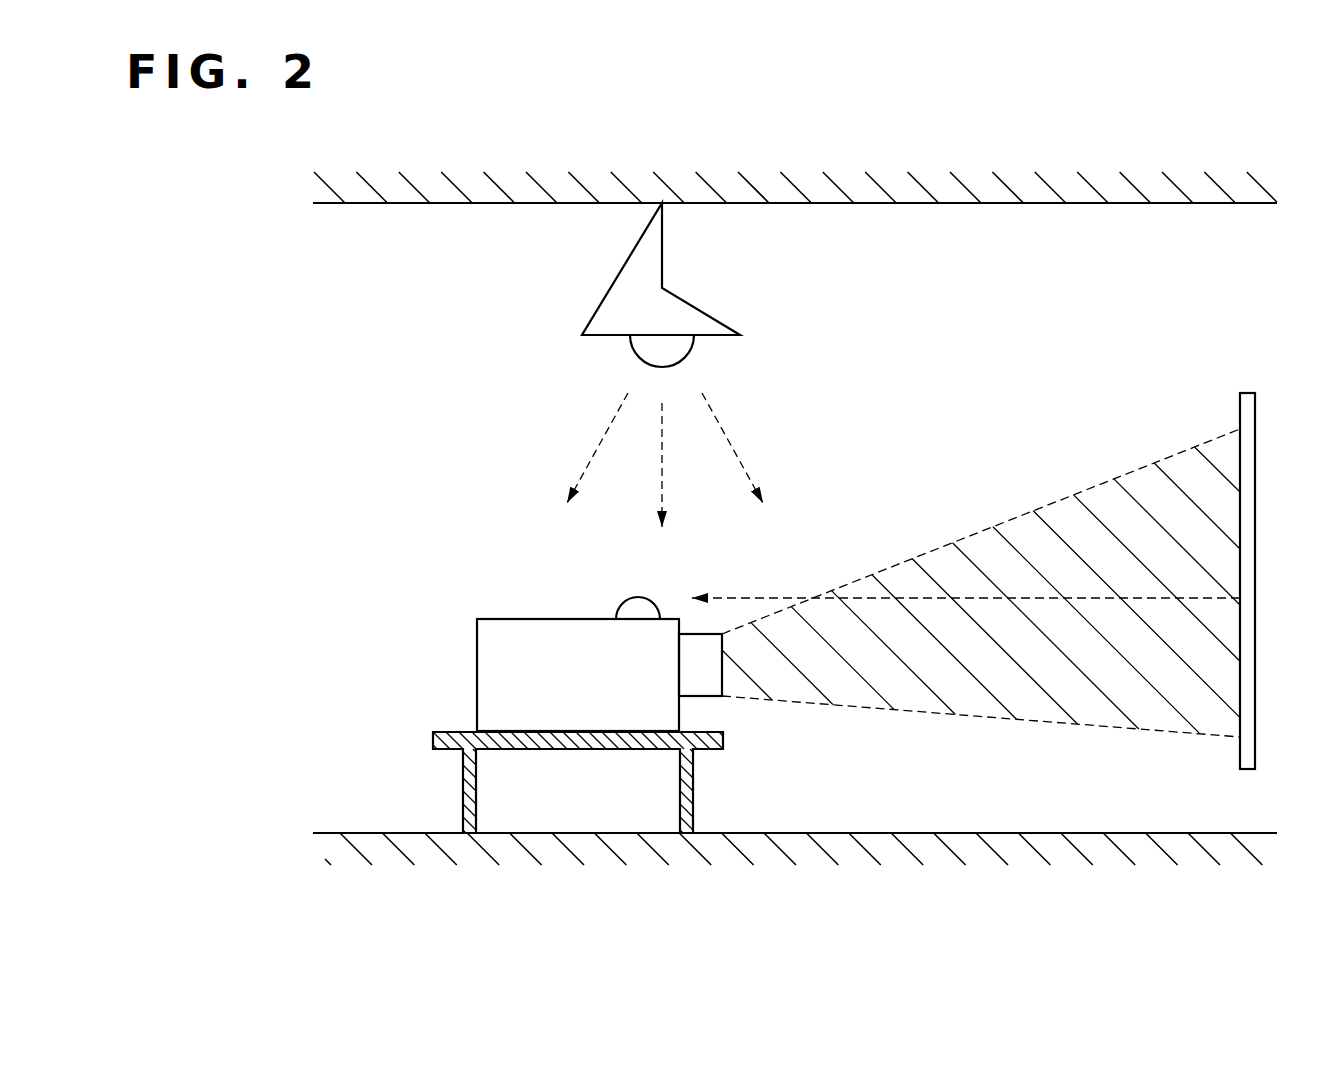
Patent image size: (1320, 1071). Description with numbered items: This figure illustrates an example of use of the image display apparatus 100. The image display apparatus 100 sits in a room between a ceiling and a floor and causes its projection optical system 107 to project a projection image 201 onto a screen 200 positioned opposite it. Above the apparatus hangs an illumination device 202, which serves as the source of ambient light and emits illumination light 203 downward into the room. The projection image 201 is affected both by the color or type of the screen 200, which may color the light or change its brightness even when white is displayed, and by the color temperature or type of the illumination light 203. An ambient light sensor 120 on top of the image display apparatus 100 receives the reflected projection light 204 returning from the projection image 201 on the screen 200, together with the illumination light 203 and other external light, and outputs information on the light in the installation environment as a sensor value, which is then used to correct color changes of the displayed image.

The image display apparatus 100 is at (505, 618).
The projection optical system 107 is at (703, 697).
The ambient light sensor 120 is at (630, 597).
The screen 200 is at (1247, 392).
The projection image 201 is at (1030, 710).
The illumination device 202 is at (710, 313).
The illumination light 203 is at (592, 455).
The reflected projection light 204 is at (783, 594).